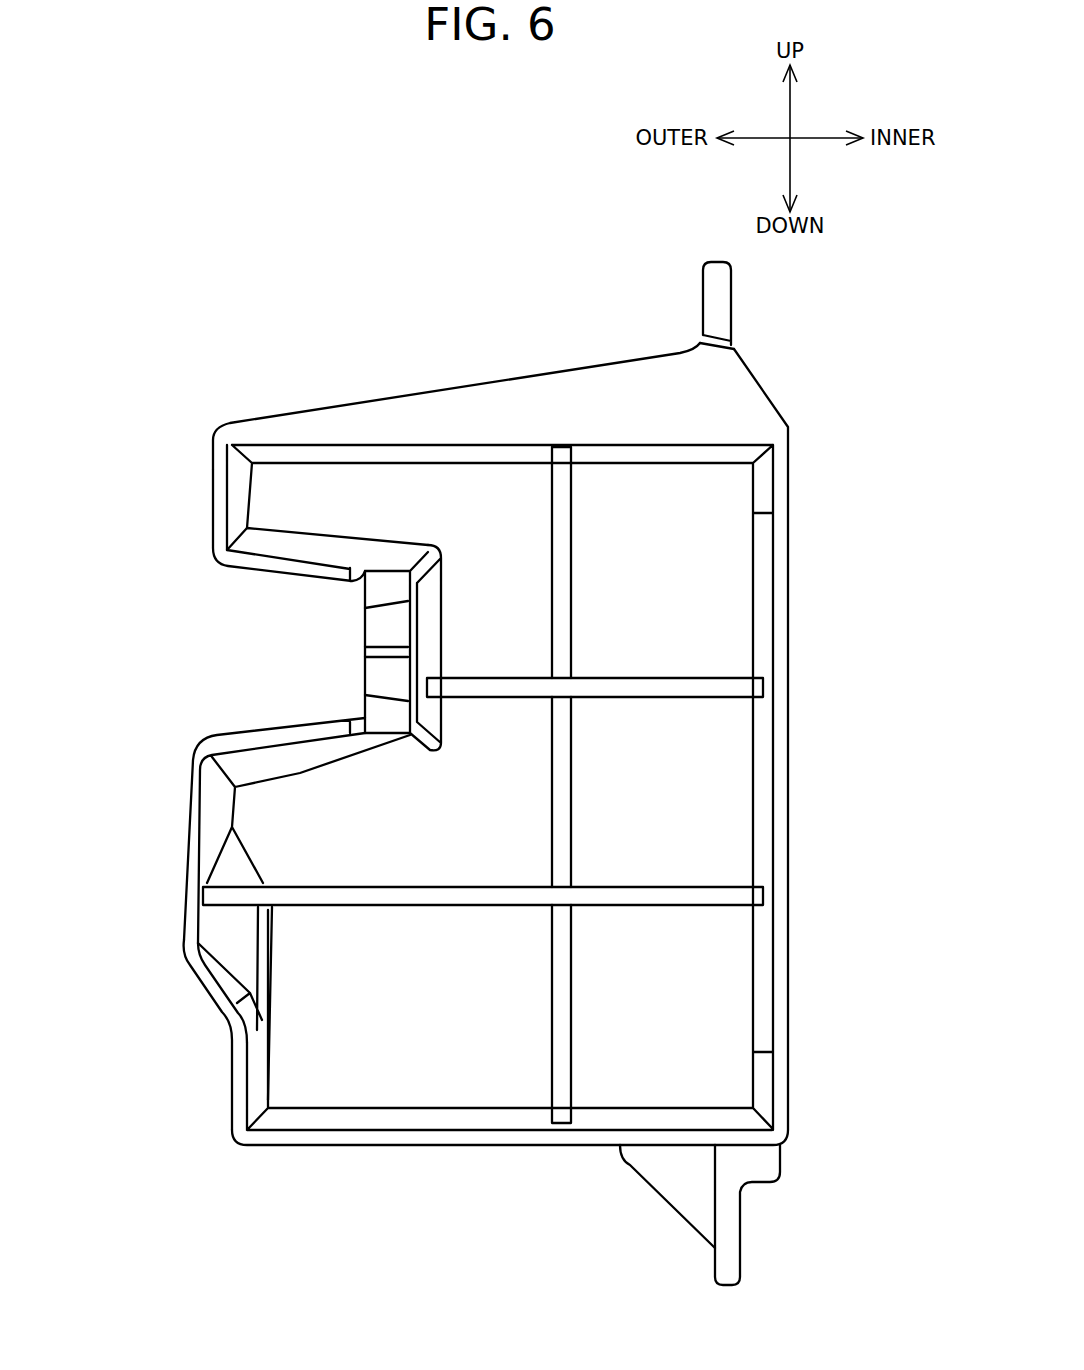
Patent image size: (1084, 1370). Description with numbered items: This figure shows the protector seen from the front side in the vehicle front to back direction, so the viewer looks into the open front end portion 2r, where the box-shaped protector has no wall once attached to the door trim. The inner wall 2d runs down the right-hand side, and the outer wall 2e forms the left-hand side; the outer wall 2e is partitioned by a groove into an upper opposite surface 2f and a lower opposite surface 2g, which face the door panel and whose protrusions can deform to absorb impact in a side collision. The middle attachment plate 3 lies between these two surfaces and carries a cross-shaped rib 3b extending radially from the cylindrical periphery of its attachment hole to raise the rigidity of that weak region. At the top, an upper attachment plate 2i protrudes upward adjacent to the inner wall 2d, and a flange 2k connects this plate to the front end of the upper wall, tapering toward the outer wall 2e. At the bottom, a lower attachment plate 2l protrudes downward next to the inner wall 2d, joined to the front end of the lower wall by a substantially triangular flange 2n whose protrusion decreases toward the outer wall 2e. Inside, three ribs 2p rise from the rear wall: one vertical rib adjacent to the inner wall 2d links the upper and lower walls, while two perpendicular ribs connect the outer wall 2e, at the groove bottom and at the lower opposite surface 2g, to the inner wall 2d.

The inner wall 2d is at (788, 938).
The outer wall 2e is at (230, 1088).
The upper opposite surface 2f is at (215, 485).
The lower opposite surface 2g is at (185, 872).
The upper attachment plate 2i is at (720, 290).
The flange 2k is at (603, 383).
The lower attachment plate 2l is at (732, 1228).
The flange 2n is at (673, 1182).
The ribs 2p is at (562, 560).
The front end portion 2r is at (568, 760).
The middle attachment plate 3 is at (413, 632).
The rib 3b is at (380, 585).